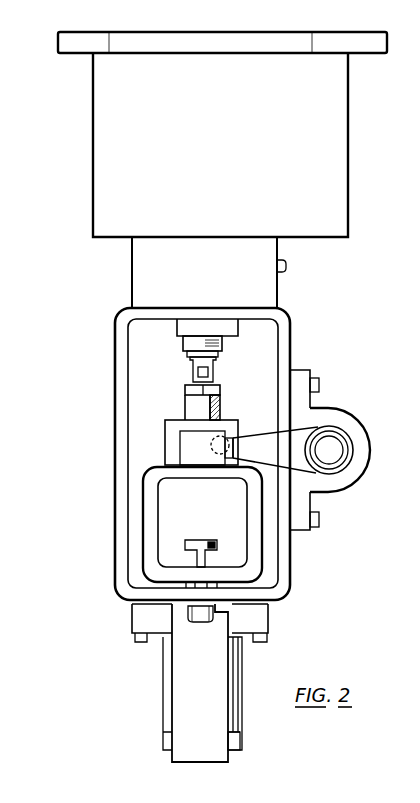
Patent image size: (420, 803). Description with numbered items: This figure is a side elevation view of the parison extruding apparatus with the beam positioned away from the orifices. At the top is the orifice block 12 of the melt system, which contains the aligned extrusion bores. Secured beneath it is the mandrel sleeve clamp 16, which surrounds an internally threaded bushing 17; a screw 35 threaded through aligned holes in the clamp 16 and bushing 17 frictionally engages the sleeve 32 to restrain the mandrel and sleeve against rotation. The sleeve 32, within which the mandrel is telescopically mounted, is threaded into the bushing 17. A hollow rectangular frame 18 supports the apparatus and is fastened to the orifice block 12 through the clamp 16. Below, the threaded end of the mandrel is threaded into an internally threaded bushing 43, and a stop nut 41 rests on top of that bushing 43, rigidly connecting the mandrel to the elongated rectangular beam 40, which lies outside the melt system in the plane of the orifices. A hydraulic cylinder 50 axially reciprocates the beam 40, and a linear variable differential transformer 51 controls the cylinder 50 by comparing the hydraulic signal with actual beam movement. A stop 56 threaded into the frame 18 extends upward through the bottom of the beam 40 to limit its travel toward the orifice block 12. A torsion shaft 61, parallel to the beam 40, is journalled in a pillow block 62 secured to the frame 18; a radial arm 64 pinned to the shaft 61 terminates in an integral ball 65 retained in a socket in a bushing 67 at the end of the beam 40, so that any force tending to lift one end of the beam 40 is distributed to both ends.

The orifice block 12 is at (340, 100).
The mandrel sleeve clamp 16 is at (223, 280).
The screw 35 is at (286, 268).
The frame 18 is at (117, 433).
The internally threaded bushing 17 is at (180, 331).
The sleeve 32 is at (190, 343).
The internally threaded bushing 43 is at (185, 400).
The stop nut 41 is at (217, 393).
The bushing 67 is at (187, 440).
The ball 65 is at (222, 435).
The radial arm 64 is at (289, 457).
The pillow block 62 is at (352, 450).
The torsion shaft 61 is at (340, 453).
The beam 40 is at (143, 503).
The stop 56 is at (200, 540).
The linear variable differential transformer 51 is at (182, 725).
The hydraulic cylinder 50 is at (242, 745).